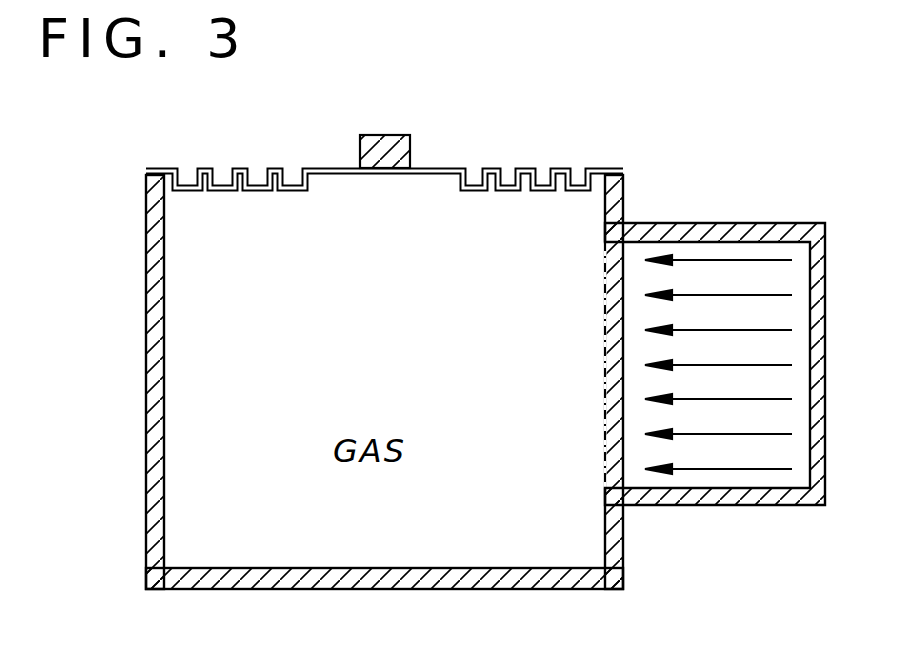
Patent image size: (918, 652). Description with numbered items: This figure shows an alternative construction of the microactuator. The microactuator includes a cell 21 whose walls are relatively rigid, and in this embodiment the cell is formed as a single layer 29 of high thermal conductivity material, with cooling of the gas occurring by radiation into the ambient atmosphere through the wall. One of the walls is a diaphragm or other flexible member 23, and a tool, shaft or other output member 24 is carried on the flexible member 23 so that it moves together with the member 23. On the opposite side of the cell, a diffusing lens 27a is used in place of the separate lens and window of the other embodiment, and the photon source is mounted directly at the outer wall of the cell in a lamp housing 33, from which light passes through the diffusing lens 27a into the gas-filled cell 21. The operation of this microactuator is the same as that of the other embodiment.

The cell 21 is at (268, 569).
The flexible member 23 is at (250, 124).
The output member 24 is at (403, 145).
The diffusing lens 27a is at (612, 410).
The thermal conducting wall 29 is at (147, 338).
The lamp housing 33 is at (728, 225).